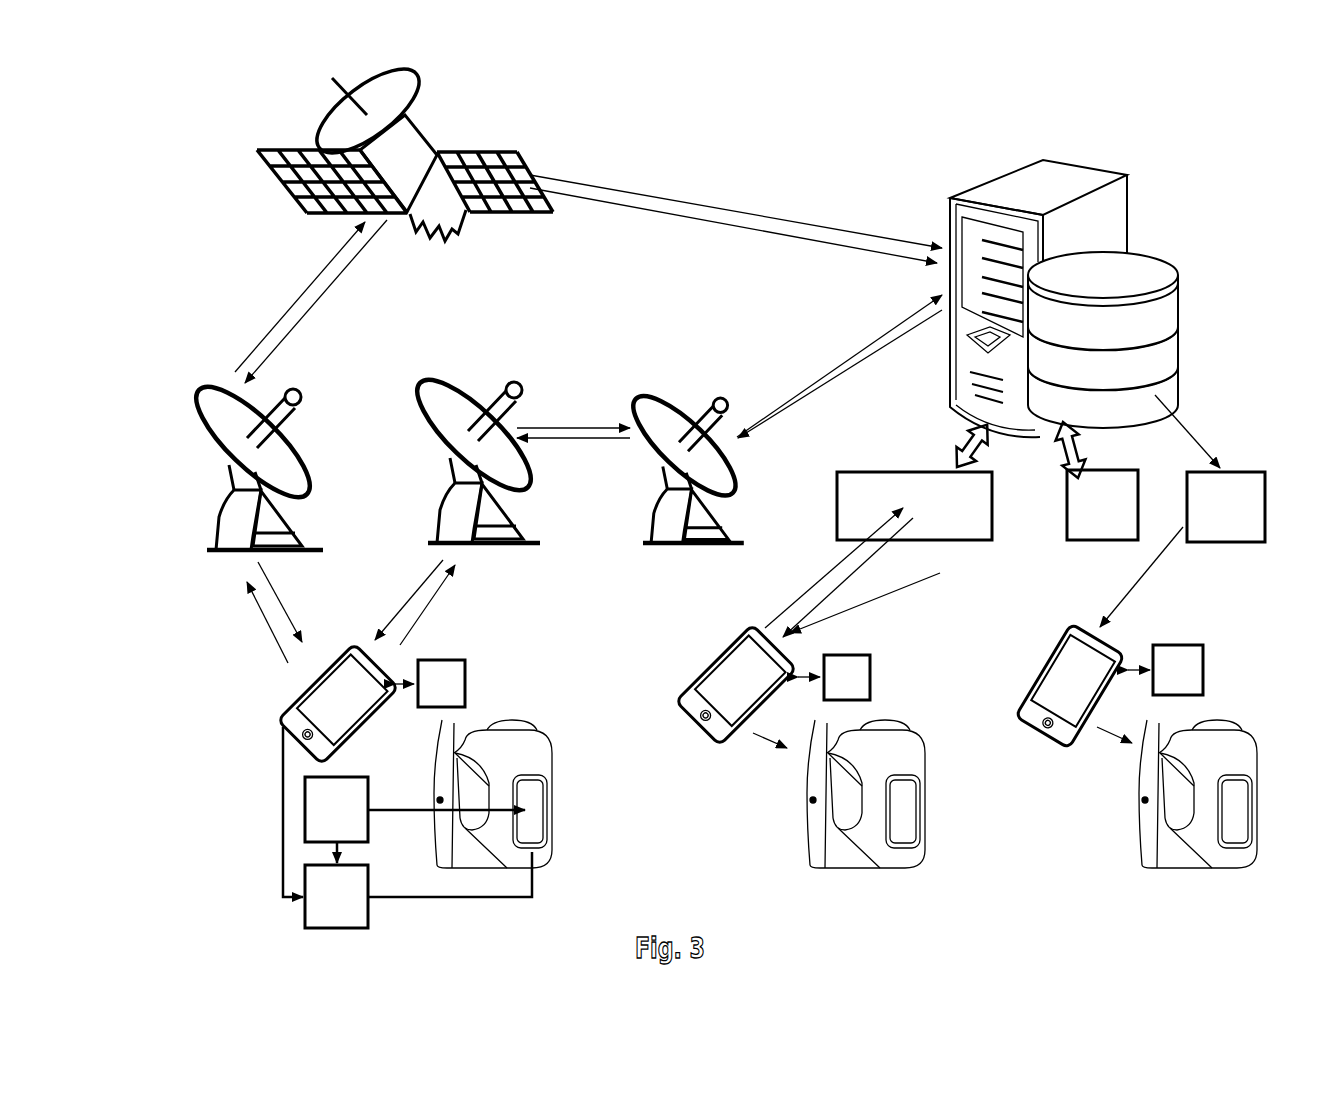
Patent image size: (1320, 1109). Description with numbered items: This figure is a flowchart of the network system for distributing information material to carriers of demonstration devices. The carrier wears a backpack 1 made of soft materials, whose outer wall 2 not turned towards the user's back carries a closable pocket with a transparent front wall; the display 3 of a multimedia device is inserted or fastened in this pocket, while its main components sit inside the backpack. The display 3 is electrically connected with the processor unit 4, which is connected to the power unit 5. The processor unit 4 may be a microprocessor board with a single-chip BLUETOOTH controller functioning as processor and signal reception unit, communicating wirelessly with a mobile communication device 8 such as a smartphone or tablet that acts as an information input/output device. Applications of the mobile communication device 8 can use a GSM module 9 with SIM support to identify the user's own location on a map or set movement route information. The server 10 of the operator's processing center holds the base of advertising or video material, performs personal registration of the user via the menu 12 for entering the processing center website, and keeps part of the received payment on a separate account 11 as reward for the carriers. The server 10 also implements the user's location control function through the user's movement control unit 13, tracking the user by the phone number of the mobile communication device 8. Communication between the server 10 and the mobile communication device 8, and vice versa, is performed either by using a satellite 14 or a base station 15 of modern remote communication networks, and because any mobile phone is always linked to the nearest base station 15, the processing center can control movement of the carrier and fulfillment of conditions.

The backpack 1 is at (567, 843).
The outer wall 2 is at (521, 791).
The display 3 is at (560, 808).
The processor unit 4 is at (322, 820).
The power unit 5 is at (337, 912).
The mobile communication device 8 is at (297, 720).
The GSM module 9 is at (433, 690).
The server 10 is at (1032, 152).
The separate account 11 is at (1100, 515).
The menu 12 is at (858, 483).
The user's movement control unit 13 is at (1227, 503).
The satellite 14 is at (398, 143).
The base station 15 is at (223, 448).